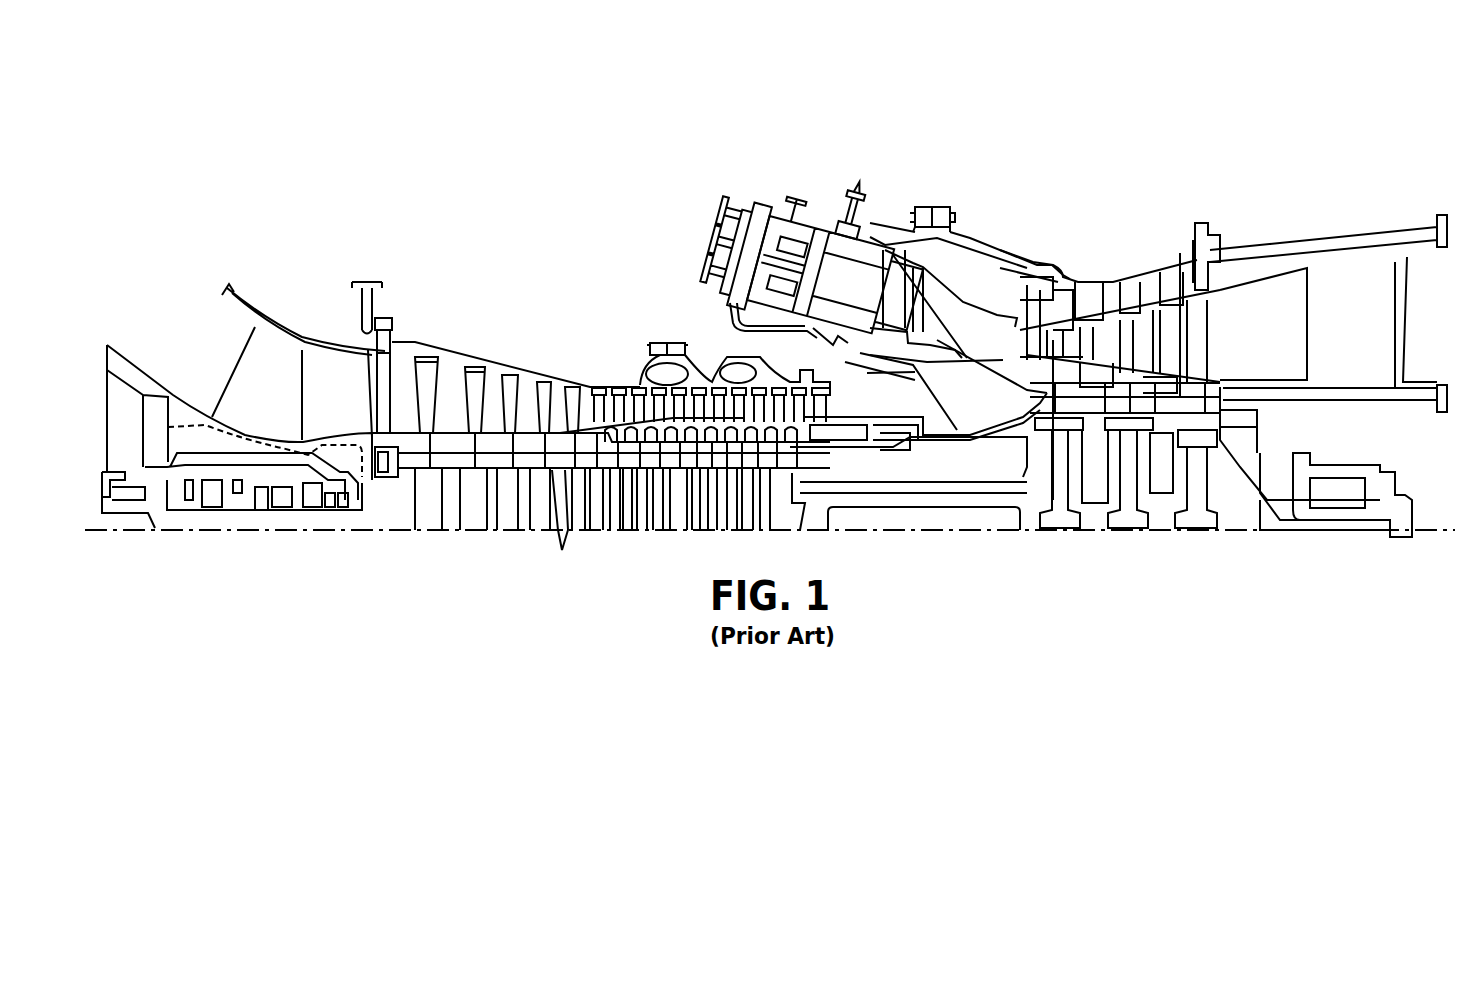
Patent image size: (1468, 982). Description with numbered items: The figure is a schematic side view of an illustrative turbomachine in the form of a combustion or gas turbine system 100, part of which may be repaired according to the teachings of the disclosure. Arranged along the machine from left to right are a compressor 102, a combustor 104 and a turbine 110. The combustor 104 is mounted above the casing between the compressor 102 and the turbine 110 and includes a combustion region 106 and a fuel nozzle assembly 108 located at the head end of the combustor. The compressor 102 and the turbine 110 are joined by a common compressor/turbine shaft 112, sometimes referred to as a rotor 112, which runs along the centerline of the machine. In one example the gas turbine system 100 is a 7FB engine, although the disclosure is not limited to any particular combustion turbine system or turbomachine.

The gas turbine system 100 is at (258, 136).
The compressor 102 is at (488, 362).
The combustor 104 is at (874, 135).
The combustion region 106 is at (847, 262).
The fuel nozzle assembly 108 is at (770, 207).
The turbine 110 is at (1180, 262).
The common compressor/turbine shaft 112 is at (415, 487).